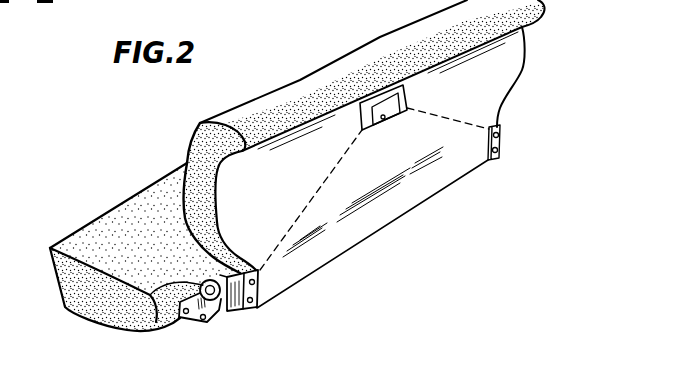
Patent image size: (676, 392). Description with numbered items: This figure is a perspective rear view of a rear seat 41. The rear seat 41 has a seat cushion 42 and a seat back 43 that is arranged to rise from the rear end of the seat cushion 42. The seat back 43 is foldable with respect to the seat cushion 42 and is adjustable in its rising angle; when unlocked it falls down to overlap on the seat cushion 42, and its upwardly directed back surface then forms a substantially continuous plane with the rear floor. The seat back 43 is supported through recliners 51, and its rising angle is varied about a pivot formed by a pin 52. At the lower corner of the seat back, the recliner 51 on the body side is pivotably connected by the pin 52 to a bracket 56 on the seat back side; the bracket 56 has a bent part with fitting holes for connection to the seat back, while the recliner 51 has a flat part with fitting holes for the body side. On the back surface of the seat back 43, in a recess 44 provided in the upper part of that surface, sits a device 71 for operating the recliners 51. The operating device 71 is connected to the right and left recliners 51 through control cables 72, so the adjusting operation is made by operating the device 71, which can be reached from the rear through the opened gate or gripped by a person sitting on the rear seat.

The rear seat 41 is at (266, 80).
The seat cushion 42 is at (120, 222).
The seat back 43 is at (508, 53).
The recess 44 is at (387, 118).
The recliner 51 is at (192, 315).
The pin 52 is at (153, 297).
The bracket 56 is at (235, 297).
The operating device 71 is at (381, 100).
The control cables 72 is at (317, 190).